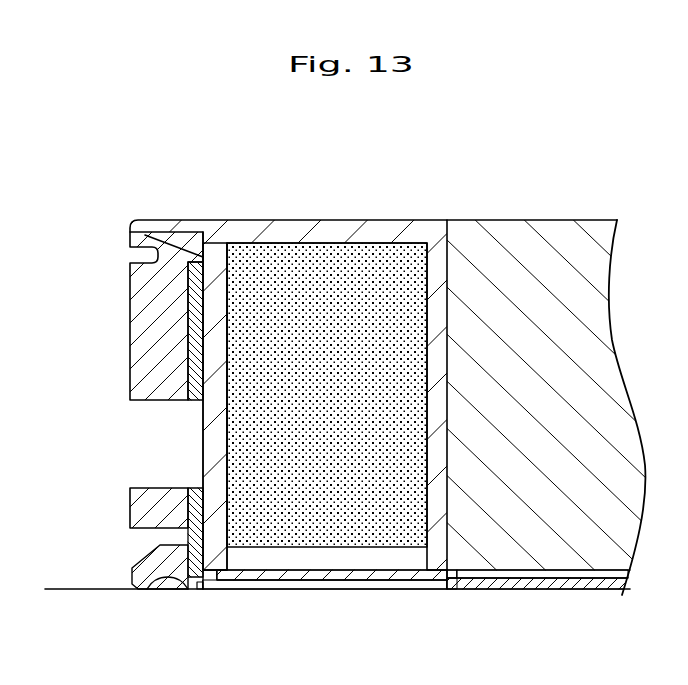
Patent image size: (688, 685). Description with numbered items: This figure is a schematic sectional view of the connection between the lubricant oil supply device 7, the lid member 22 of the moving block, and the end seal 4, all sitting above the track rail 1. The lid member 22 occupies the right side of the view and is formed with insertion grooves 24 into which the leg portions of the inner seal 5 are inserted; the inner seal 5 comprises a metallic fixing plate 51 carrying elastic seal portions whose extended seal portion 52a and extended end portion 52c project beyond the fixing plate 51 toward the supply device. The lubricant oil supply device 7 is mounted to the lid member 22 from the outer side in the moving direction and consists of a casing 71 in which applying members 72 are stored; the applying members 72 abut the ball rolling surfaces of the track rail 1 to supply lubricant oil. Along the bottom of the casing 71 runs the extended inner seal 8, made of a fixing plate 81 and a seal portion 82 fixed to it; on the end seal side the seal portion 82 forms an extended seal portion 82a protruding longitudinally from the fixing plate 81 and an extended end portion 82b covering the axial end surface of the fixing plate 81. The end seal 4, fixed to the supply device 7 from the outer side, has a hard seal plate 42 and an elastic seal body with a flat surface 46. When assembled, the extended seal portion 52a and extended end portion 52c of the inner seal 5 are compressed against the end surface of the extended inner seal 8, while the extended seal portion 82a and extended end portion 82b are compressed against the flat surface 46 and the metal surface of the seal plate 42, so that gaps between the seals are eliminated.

The track rail 1 is at (75, 587).
The end seal 4 is at (128, 287).
The seal plate 42 is at (192, 354).
The flat surface 46 is at (190, 587).
The inner seal 5 is at (520, 591).
The fixing plate 51 is at (562, 579).
The extended seal portion 52a is at (455, 587).
The extended end portion 52c is at (449, 570).
The lubricant oil supply device 7 is at (283, 218).
The casing 71 is at (219, 240).
The applying members 72 is at (372, 244).
The extended inner seal 8 is at (398, 591).
The fixing plate 81 is at (327, 576).
The seal portion 82 is at (283, 580).
The extended seal portion 82a is at (205, 585).
The extended end portion 82b is at (177, 530).
The lid member 22 is at (537, 218).
The insertion grooves 24 is at (628, 570).